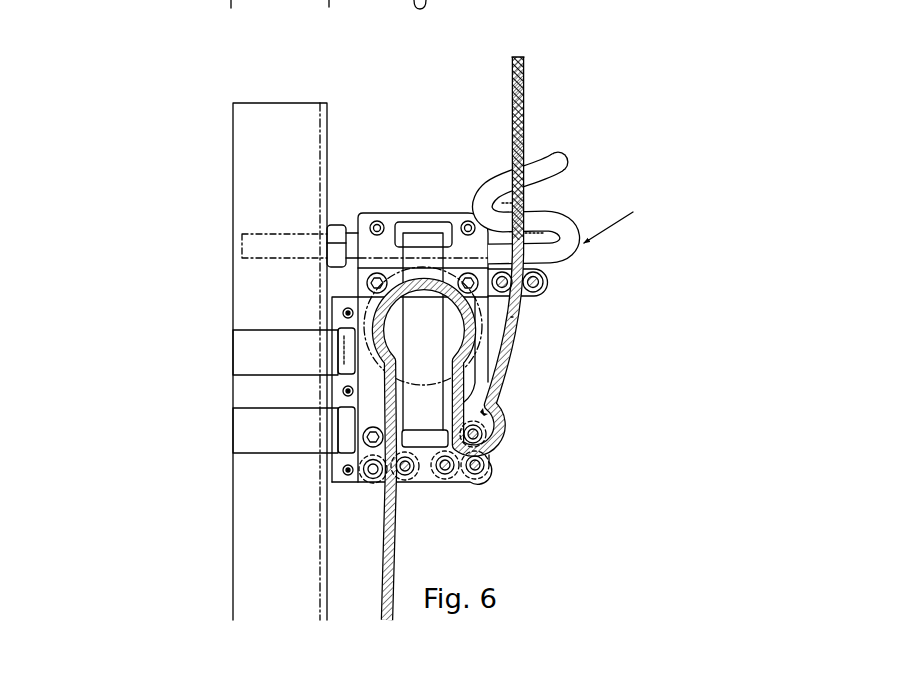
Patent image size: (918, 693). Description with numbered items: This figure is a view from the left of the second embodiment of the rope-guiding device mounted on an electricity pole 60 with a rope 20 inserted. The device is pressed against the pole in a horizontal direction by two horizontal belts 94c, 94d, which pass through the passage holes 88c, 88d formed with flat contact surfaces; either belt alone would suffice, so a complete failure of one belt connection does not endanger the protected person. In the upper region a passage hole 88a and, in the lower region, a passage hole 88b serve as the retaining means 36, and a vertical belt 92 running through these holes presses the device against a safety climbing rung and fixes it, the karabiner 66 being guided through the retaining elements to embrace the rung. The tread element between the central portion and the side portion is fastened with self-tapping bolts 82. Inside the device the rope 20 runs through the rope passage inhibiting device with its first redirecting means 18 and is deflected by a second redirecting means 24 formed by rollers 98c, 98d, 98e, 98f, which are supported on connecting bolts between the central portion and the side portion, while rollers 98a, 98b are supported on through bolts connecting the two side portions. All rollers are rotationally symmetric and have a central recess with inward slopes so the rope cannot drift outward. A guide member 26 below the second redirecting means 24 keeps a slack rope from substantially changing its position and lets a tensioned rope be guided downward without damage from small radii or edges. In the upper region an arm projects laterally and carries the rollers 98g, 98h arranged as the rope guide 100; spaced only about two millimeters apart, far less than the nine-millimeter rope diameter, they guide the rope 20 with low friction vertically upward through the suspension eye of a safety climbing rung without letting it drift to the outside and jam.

The electricity pole 60 is at (252, 180).
The horizontal belt 94c is at (233, 290).
The horizontal belt 94d is at (252, 442).
The karabiner 66 is at (352, 240).
The retaining means 36 is at (298, 329).
The passage hole 88a is at (423, 224).
The passage hole 88b is at (425, 449).
The passage hole 88c is at (339, 341).
The passage hole 88d is at (344, 418).
The first redirecting means 18 is at (350, 356).
The self-tapping bolt 82 is at (376, 221).
The rope 20 is at (530, 338).
The second redirecting means 24 is at (530, 338).
The vertical belt 92 is at (433, 335).
The guide member 26 is at (544, 461).
The roller 98a is at (352, 484).
The roller 98b is at (378, 484).
The roller 98c is at (407, 483).
The roller 98d is at (452, 482).
The roller 98e is at (490, 466).
The roller 98f is at (493, 425).
The roller 98g is at (513, 318).
The roller 98h is at (550, 282).
The rope guide 100 is at (633, 215).